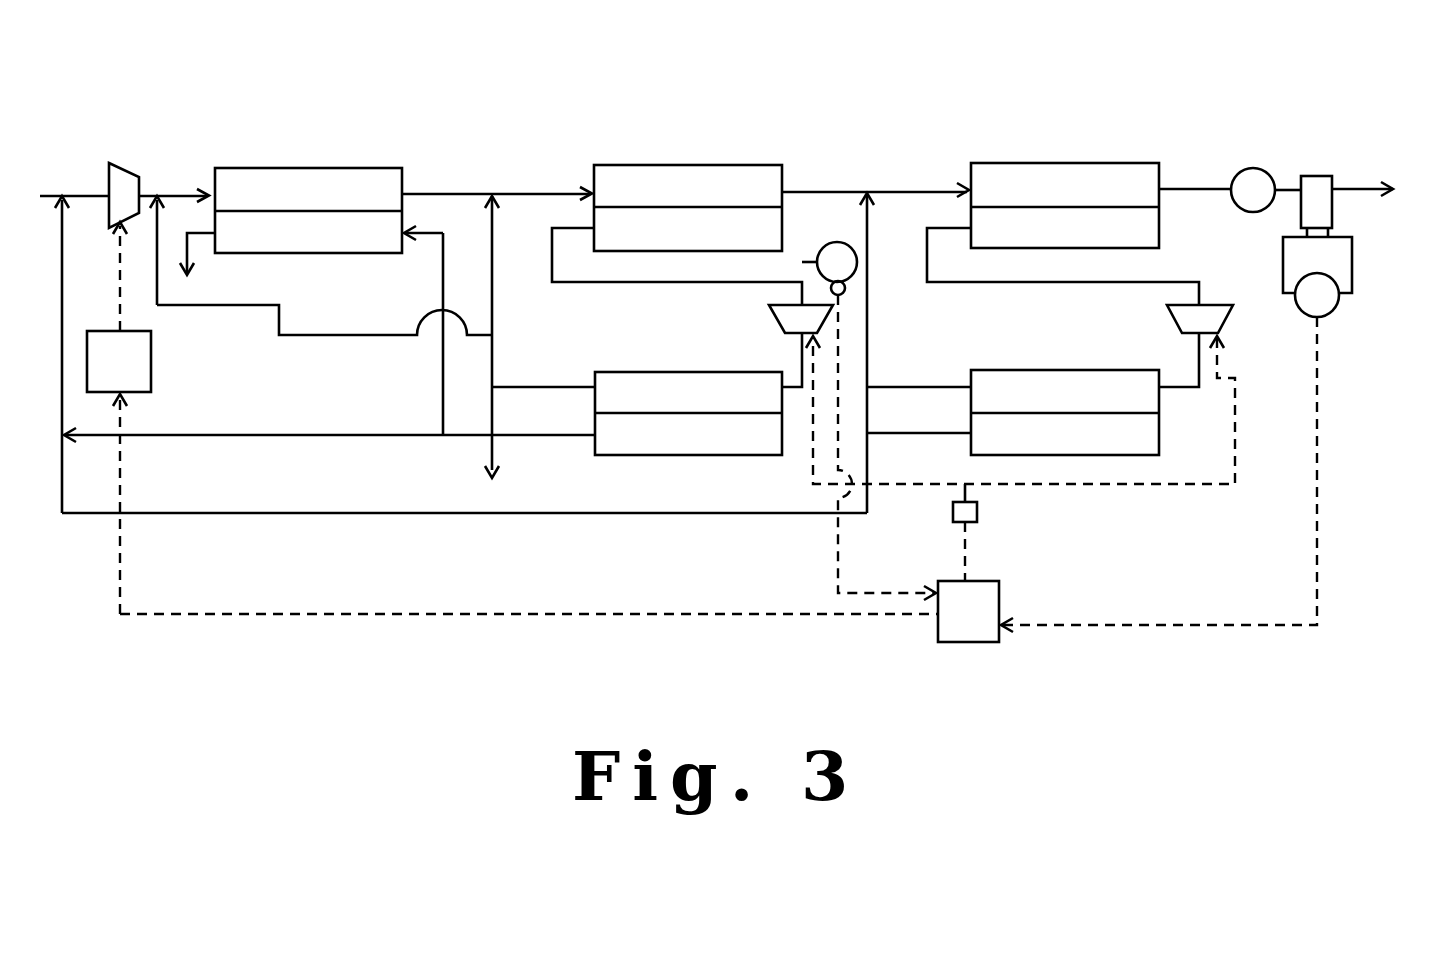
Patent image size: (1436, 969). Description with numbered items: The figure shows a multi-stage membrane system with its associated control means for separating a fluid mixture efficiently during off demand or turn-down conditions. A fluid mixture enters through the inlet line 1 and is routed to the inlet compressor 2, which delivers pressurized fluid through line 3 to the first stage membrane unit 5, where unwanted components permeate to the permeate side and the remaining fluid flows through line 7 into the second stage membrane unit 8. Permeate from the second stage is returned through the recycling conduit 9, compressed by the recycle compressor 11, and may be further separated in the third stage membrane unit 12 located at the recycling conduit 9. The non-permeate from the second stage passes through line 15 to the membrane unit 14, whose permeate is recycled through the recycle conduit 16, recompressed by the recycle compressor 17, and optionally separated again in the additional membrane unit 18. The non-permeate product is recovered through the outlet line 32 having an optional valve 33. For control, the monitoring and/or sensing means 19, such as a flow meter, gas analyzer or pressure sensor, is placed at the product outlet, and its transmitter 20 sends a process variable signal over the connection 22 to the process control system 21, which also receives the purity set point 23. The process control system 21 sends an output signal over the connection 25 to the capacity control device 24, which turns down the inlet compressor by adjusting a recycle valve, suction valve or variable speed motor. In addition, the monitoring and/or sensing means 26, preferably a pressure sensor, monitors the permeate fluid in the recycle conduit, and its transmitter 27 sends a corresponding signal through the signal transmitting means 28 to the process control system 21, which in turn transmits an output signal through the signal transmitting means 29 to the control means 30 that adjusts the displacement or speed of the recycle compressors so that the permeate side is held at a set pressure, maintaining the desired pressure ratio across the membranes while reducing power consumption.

The inlet line 1 is at (47, 196).
The inlet compressor 2 is at (119, 163).
The line 3 is at (167, 196).
The first stage membrane unit 5 is at (302, 168).
The line 7 is at (445, 194).
The second stage membrane unit 8 is at (648, 165).
The recycling conduit 9 is at (795, 387).
The recycle compressor 11 is at (783, 305).
The third stage membrane unit 12 is at (692, 372).
The membrane unit 14 is at (1093, 163).
The line 15 is at (813, 192).
The recycle conduit 16 is at (1199, 340).
The recycle compressor 17 is at (1222, 306).
The additional membrane unit 18 is at (1103, 370).
The monitoring and/or sensing means 19 is at (1315, 176).
The transmitter 20 is at (1342, 308).
The process control system 21 is at (968, 611).
The connection 22 is at (1318, 505).
The purity set point 23 is at (938, 628).
The capacity control device 24 is at (152, 372).
The connection 25 is at (388, 614).
The monitoring and/or sensing means 26 is at (843, 220).
The transmitter 27 is at (845, 290).
The signal transmitting means 28 is at (838, 567).
The signal transmitting means 29 is at (965, 563).
The control means 30 is at (977, 515).
The outlet line 32 is at (1200, 189).
The valve 33 is at (1248, 168).